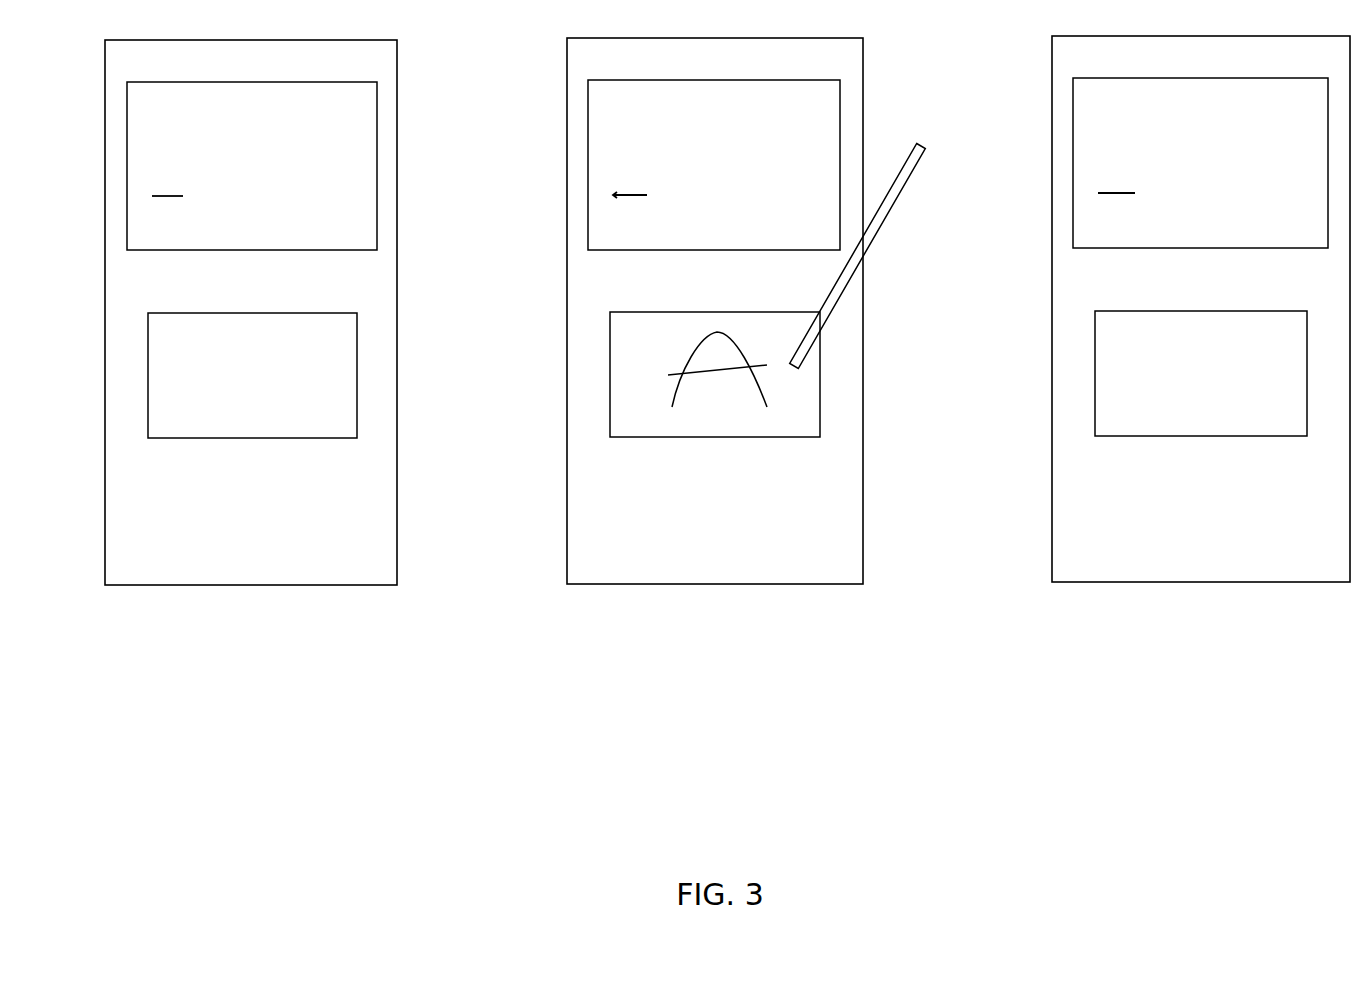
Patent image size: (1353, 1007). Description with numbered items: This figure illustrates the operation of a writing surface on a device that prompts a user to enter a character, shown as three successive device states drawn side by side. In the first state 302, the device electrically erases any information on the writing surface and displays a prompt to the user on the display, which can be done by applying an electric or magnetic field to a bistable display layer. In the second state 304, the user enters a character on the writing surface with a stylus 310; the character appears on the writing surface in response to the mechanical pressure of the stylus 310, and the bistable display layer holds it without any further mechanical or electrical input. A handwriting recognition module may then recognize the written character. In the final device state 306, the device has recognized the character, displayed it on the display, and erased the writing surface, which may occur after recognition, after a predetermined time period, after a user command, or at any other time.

The first state 302 is at (213, 357).
The second state 304 is at (715, 358).
The final device state 306 is at (1145, 356).
The stylus 310 is at (895, 228).